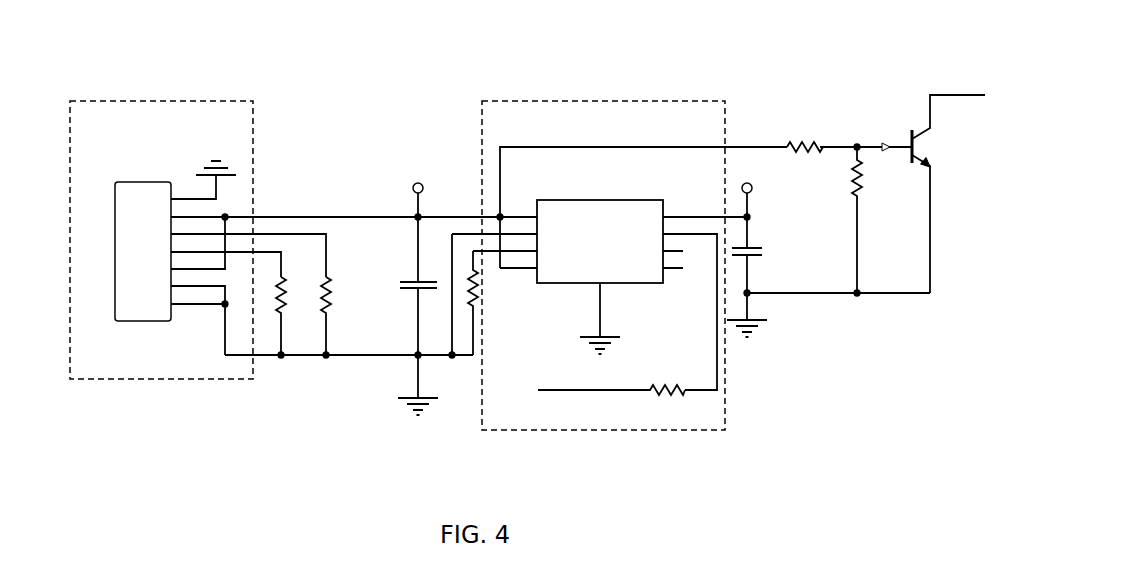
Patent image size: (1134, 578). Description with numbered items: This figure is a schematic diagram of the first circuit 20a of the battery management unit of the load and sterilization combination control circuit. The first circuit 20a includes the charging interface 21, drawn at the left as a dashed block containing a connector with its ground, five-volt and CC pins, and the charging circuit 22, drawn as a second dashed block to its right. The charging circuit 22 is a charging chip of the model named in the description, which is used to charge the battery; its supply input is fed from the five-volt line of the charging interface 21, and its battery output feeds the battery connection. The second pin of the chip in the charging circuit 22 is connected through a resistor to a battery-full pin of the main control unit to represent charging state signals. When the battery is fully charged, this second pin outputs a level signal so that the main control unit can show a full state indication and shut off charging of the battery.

The first circuit 20a is at (516, 39).
The charging interface 21 is at (155, 101).
The charging circuit 22 is at (602, 101).